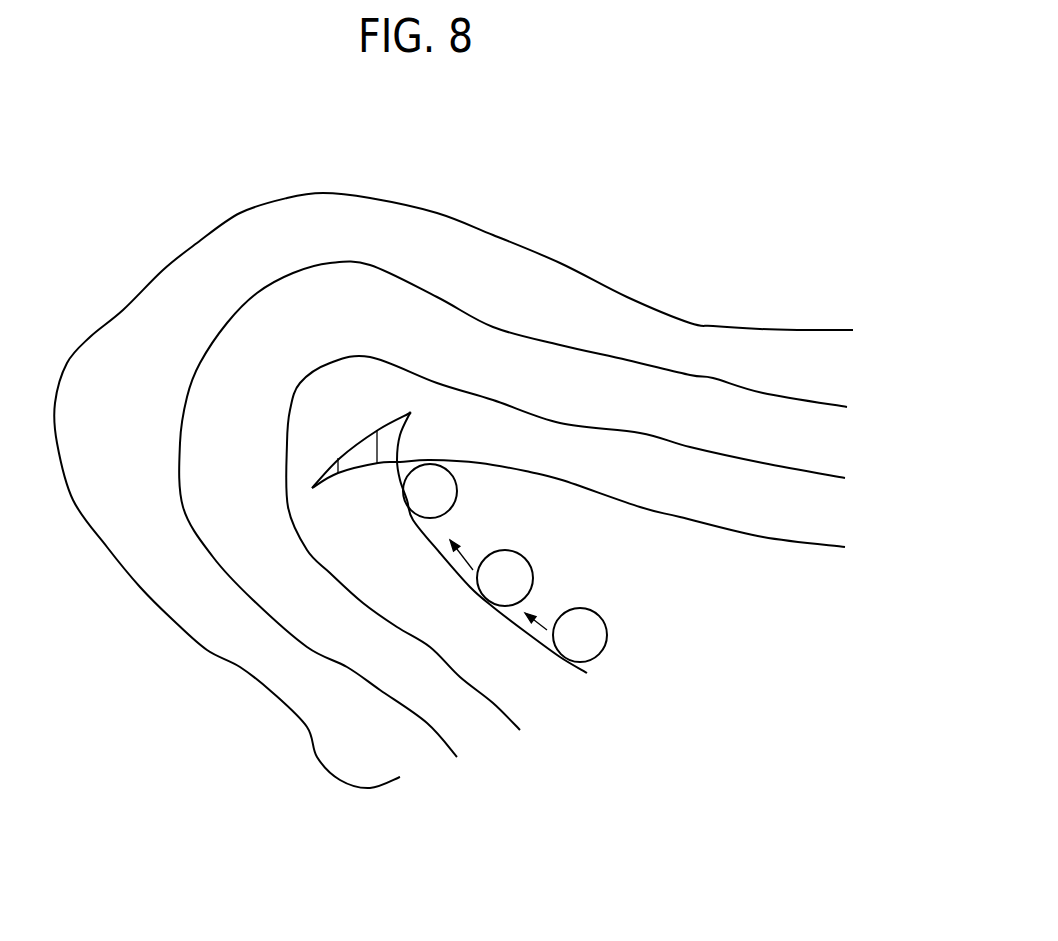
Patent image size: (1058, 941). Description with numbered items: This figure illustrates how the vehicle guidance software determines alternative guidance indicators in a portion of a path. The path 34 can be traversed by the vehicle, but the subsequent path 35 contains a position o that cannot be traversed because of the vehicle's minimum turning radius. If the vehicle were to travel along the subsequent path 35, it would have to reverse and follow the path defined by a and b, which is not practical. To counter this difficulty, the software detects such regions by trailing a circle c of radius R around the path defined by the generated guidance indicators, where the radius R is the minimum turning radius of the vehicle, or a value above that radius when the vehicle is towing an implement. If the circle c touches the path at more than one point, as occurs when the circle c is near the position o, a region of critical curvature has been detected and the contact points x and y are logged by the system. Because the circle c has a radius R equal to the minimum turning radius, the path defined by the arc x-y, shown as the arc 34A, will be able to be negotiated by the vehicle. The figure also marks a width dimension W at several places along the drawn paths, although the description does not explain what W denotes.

The path 34 is at (578, 418).
The arc x-y 34A is at (408, 450).
The subsequent path 35 is at (562, 482).
The width dimension W is at (475, 158).
The radius R is at (406, 484).
The reversing path point a is at (354, 466).
The reversing path point b is at (411, 398).
The circle c is at (458, 497).
The position o is at (397, 460).
The contact point x is at (432, 462).
The contact point y is at (403, 503).